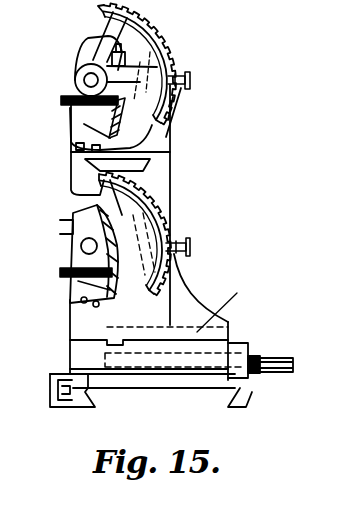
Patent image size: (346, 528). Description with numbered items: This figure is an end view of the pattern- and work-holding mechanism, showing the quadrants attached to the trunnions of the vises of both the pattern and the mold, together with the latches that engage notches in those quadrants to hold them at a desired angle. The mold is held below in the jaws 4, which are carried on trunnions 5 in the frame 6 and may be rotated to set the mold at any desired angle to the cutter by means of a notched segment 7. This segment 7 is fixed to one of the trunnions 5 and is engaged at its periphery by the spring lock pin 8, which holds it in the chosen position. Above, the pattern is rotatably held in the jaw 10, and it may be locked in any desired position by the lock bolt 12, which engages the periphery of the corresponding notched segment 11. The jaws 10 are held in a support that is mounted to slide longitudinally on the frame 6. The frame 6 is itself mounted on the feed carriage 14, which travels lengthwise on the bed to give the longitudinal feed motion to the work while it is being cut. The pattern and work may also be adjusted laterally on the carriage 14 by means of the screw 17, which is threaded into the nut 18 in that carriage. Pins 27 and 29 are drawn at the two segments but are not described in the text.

The jaws 4 is at (150, 219).
The trunnions 5 is at (84, 250).
The frame 6 is at (158, 216).
The notched segment 7 is at (153, 200).
The spring lock pin 8 is at (173, 243).
The jaw 10 is at (108, 44).
The notched segment 11 is at (168, 110).
The lock bolt 12 is at (185, 77).
The feed carriage 14 is at (248, 378).
The screw 17 is at (248, 350).
The nut 18 is at (143, 363).
The upper pin 27 is at (61, 101).
The lower pin 29 is at (62, 274).